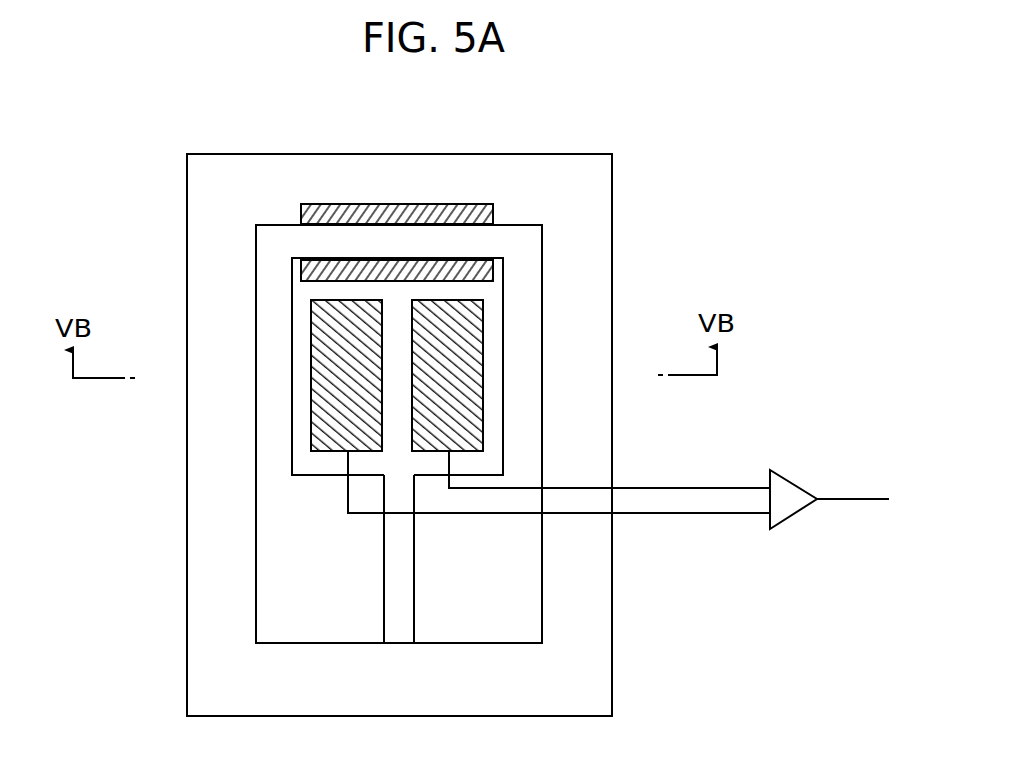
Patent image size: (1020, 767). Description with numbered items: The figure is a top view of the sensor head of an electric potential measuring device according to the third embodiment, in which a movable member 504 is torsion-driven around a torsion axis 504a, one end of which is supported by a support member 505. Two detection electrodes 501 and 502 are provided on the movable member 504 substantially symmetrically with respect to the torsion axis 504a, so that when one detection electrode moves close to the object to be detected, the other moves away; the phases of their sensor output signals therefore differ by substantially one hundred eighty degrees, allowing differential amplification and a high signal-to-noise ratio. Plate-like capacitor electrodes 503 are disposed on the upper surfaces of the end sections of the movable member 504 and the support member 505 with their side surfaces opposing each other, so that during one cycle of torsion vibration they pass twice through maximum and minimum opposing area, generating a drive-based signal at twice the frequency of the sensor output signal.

The detection electrode 501 is at (332, 311).
The detection electrode 502 is at (482, 301).
The capacitor electrodes 503 is at (385, 262).
The movable member 504 is at (303, 452).
The torsion axis (torsion bar) 504a is at (403, 545).
The support member 505 is at (584, 666).